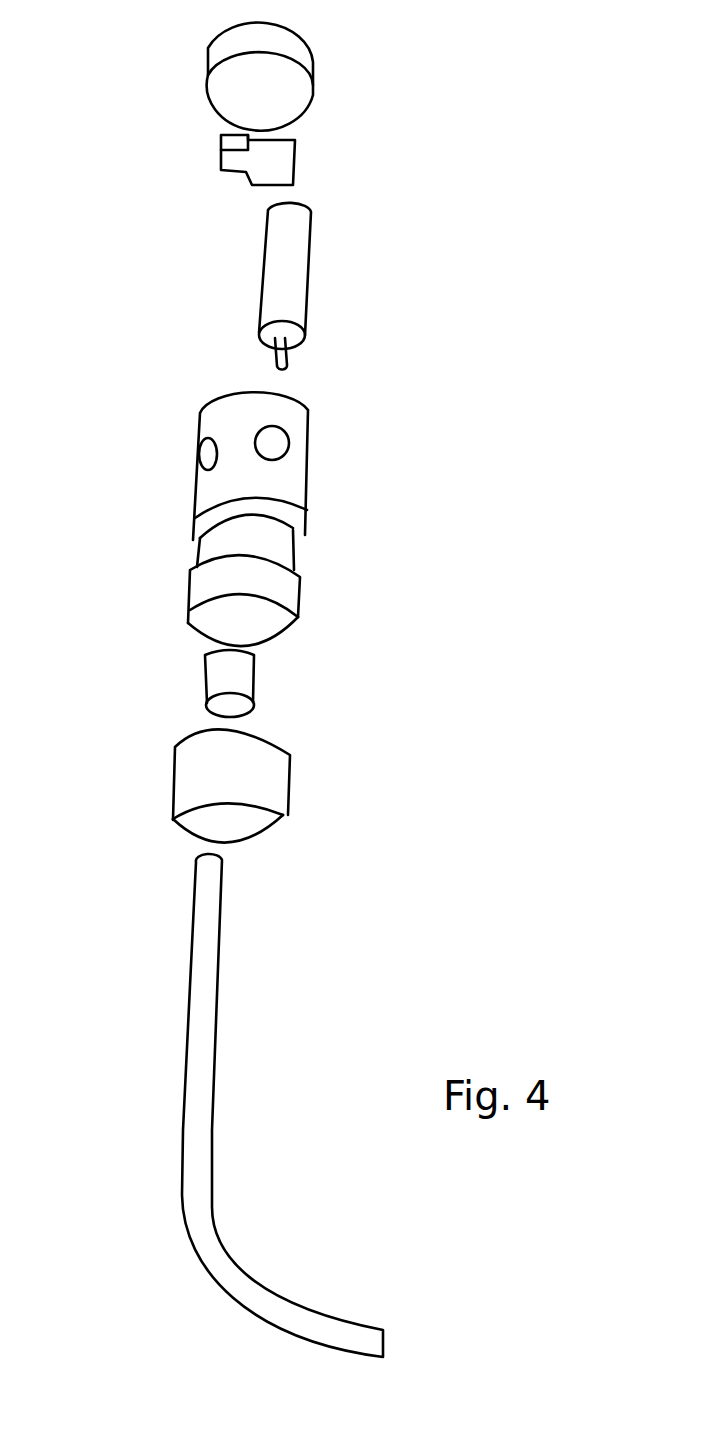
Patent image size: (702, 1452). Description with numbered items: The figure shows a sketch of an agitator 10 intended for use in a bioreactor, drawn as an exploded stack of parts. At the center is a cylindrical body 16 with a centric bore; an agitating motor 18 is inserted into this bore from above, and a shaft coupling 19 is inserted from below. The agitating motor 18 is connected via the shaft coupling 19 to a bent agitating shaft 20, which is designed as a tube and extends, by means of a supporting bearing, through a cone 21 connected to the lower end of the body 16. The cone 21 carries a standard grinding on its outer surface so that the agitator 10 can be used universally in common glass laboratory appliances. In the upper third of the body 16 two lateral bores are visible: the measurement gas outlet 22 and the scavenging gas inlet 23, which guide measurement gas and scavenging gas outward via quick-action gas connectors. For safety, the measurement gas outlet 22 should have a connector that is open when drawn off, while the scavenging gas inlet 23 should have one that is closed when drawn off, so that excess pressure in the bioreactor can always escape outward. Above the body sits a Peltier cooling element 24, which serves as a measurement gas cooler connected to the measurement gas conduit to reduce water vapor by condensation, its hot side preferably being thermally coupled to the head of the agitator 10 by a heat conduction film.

The agitator 10 is at (447, 437).
The cylindrical body 16 is at (187, 512).
The agitating motor 18 is at (300, 262).
The shaft coupling 19 is at (203, 680).
The bent agitating shaft 20 is at (183, 1068).
The cone 21 is at (290, 788).
The measurement gas outlet 22 is at (207, 458).
The scavenging gas inlet 23 is at (278, 445).
The Peltier cooling element 24 is at (219, 165).